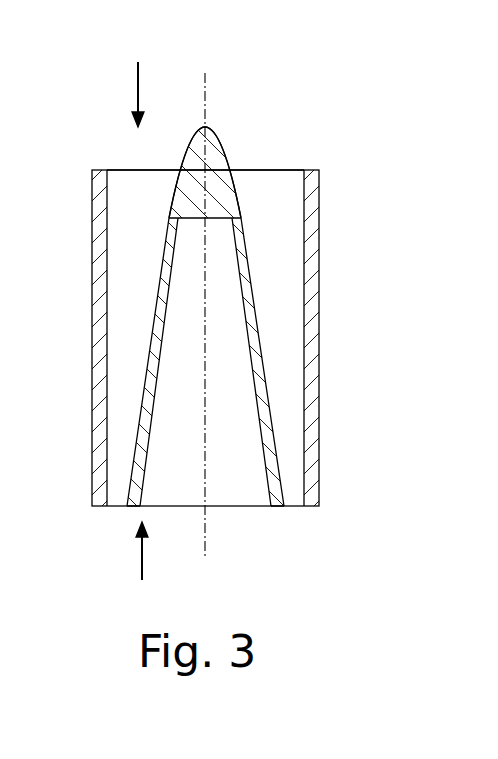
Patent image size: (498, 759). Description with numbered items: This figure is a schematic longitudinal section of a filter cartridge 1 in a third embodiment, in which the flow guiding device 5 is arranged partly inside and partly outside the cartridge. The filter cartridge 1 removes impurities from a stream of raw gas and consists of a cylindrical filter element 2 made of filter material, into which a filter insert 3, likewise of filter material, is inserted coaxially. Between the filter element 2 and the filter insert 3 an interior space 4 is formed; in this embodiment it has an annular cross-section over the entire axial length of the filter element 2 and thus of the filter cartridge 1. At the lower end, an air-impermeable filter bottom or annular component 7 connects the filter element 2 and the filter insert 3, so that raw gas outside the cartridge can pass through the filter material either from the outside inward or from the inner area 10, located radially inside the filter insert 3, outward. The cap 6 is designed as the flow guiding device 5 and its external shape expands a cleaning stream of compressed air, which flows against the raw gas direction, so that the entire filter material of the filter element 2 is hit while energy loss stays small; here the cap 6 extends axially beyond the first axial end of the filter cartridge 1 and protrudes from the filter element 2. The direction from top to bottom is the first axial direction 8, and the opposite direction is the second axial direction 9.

The filter cartridge 1 is at (68, 160).
The filter element 2 is at (312, 233).
The filter insert 3 is at (260, 384).
The interior space 4 is at (284, 185).
The flow guiding device 5 is at (218, 180).
The cap 6 is at (226, 148).
The filter bottom/annular component 7 is at (292, 506).
The first axial direction 8 is at (139, 79).
The second axial direction 9 is at (143, 568).
The inner area 10 is at (238, 482).